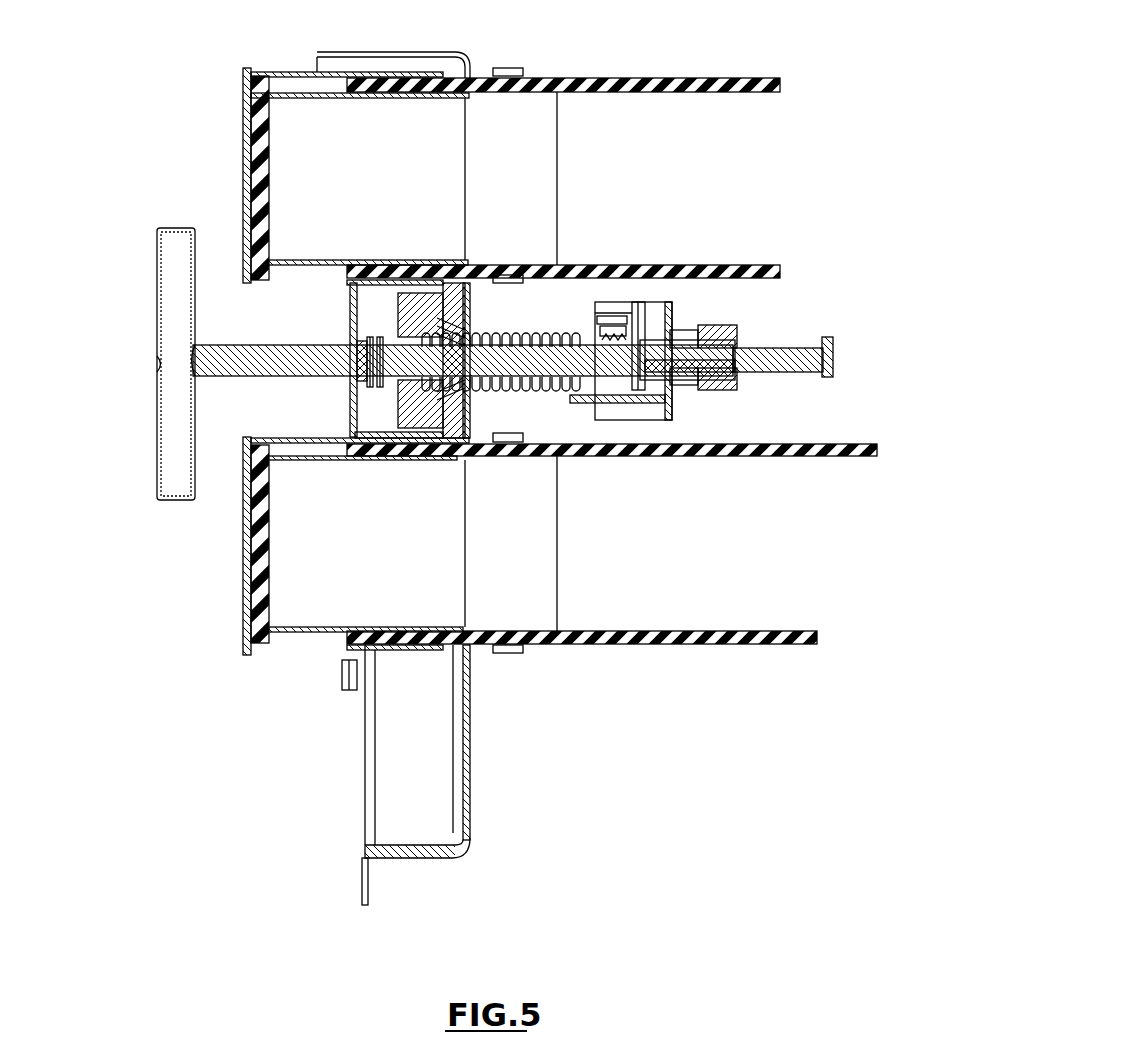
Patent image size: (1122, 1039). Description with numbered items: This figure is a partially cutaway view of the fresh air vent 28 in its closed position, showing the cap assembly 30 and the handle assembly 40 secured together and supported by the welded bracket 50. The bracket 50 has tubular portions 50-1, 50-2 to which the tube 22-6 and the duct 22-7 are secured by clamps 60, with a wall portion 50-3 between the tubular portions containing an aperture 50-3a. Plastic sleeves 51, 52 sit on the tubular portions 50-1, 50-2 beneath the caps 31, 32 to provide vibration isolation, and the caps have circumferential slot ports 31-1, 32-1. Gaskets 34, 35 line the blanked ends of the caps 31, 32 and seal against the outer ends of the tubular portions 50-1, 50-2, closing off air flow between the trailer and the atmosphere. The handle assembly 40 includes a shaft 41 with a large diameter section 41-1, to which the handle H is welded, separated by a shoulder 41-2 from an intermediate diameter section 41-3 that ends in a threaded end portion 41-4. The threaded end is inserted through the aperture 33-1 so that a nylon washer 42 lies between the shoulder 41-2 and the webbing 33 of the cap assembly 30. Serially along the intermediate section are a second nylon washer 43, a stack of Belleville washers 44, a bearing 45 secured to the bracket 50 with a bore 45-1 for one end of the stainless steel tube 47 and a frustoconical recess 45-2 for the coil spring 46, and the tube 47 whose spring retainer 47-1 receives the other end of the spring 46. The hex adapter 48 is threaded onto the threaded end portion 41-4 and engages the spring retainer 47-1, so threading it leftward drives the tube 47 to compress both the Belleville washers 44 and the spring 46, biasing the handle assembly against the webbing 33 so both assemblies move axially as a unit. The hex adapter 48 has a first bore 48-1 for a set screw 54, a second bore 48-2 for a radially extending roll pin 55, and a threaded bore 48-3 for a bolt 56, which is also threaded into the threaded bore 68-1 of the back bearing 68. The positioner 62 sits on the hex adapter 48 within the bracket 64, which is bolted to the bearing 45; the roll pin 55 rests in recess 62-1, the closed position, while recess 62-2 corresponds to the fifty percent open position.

The fresh air vent 28 is at (112, 210).
The cap assembly 30 is at (238, 96).
The cap 31 is at (245, 168).
The port 31-1 is at (330, 244).
The cap 32 is at (243, 612).
The port 32-1 is at (298, 650).
The webbing 33 is at (352, 436).
The aperture 33-1 is at (463, 361).
The gasket 34 is at (268, 152).
The gasket 35 is at (270, 552).
The handle assembly 40 is at (812, 306).
The shaft 41 is at (205, 343).
The large diameter section 41-1 is at (278, 345).
The shoulder 41-2 is at (340, 388).
The intermediate diameter section 41-3 is at (360, 432).
The threaded end portion 41-4 is at (620, 450).
The nylon washer 42 is at (352, 340).
The second nylon washer 43 is at (360, 345).
The Belleville washers 44 is at (345, 400).
The bearing 45 is at (412, 432).
The bore 45-1 is at (420, 430).
The frustoconical recess 45-2 is at (465, 290).
The coil spring 46 is at (525, 388).
The stainless steel tube 47 is at (405, 345).
The spring retainer 47-1 is at (570, 335).
The hex adapter 48 is at (700, 388).
The first bore 48-1 is at (572, 345).
The second bore 48-2 is at (720, 444).
The threaded bore 48-3 is at (737, 340).
The bracket 50 is at (472, 815).
The tubular portion 50-1 is at (510, 263).
The tubular portion 50-2 is at (557, 620).
The wall portion 50-3 is at (480, 445).
The aperture 50-3a is at (500, 455).
The plastic sleeve 51 is at (388, 100).
The plastic sleeve 52 is at (450, 640).
The set screw 54 is at (610, 345).
The roll pin 55 is at (640, 332).
The bolt 56 is at (833, 350).
The clamps 60 is at (512, 68).
The positioner 62 is at (600, 398).
The recess 62-1 is at (648, 305).
The recess 62-2 is at (620, 335).
The bracket 64 is at (568, 446).
The back bearing 68 is at (742, 372).
The threaded bore 68-1 is at (722, 372).
The tube 22-6 is at (735, 80).
The duct 22-7 is at (670, 646).
The handle H is at (158, 320).